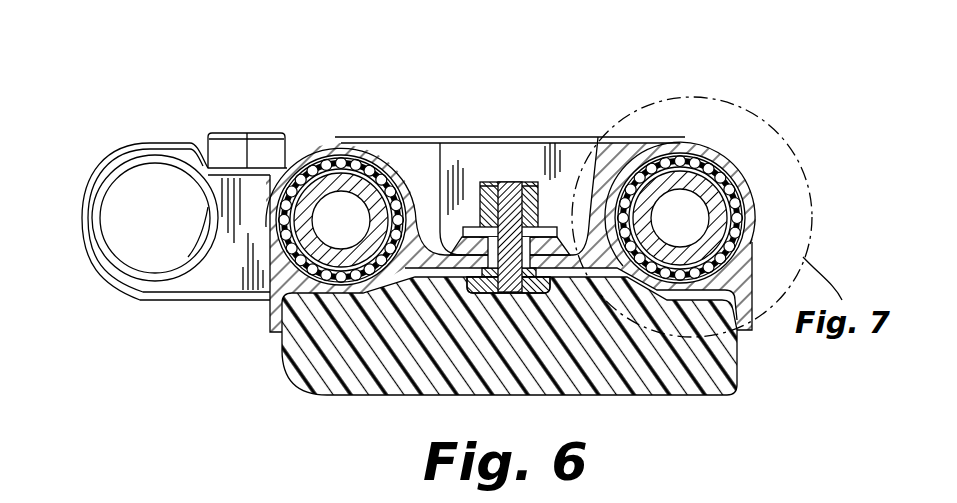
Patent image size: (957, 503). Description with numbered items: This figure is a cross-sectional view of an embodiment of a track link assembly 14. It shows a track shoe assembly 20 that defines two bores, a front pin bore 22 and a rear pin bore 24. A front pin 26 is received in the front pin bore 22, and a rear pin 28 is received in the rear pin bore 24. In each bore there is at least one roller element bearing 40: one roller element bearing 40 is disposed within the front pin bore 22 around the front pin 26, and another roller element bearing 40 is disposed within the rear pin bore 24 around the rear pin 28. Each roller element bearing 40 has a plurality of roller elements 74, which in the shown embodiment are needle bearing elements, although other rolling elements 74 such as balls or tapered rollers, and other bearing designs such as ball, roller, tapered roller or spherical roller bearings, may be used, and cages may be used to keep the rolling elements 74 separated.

The track link assembly 14 is at (137, 63).
The track shoe assembly 20 is at (511, 150).
The front pin bore 22 is at (343, 147).
The rear pin bore 24 is at (717, 169).
The front pin 26 is at (370, 150).
The rear pin 28 is at (703, 187).
The roller element bearing 40 is at (310, 143).
The roller elements 74 is at (418, 185).